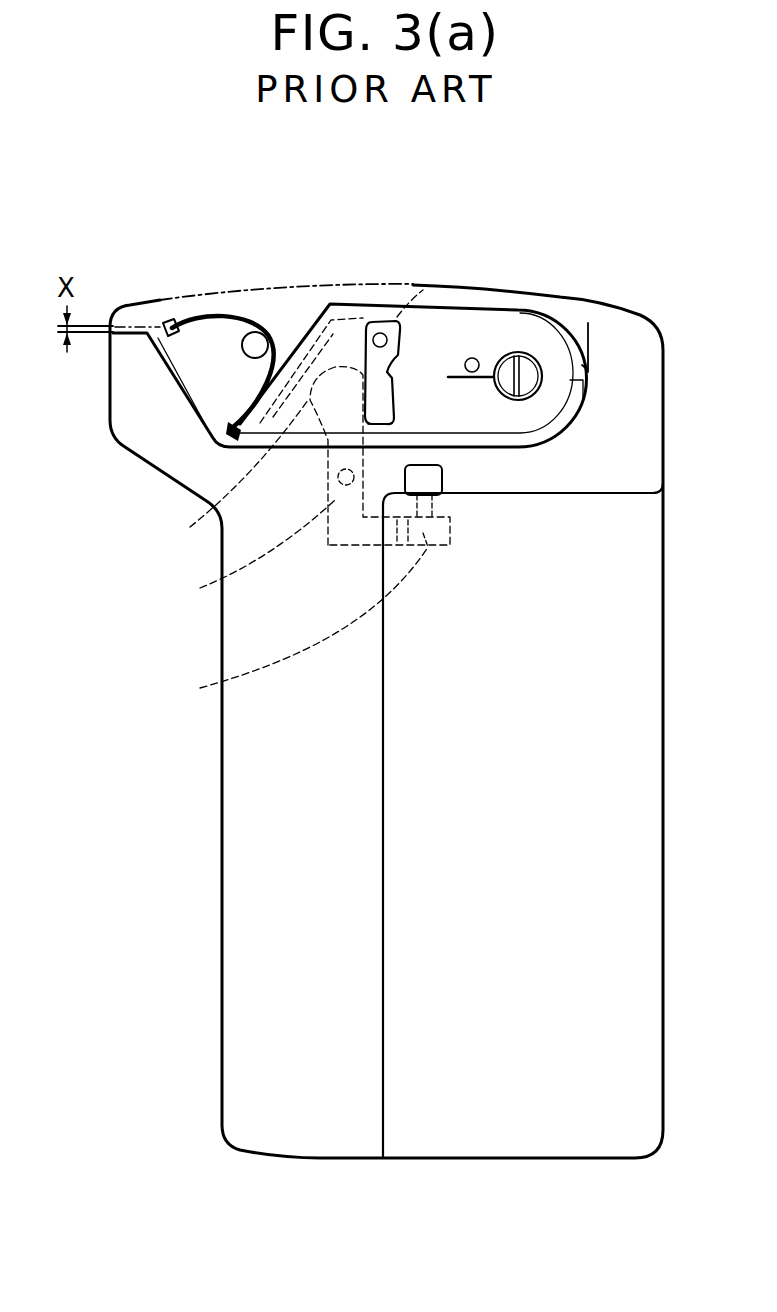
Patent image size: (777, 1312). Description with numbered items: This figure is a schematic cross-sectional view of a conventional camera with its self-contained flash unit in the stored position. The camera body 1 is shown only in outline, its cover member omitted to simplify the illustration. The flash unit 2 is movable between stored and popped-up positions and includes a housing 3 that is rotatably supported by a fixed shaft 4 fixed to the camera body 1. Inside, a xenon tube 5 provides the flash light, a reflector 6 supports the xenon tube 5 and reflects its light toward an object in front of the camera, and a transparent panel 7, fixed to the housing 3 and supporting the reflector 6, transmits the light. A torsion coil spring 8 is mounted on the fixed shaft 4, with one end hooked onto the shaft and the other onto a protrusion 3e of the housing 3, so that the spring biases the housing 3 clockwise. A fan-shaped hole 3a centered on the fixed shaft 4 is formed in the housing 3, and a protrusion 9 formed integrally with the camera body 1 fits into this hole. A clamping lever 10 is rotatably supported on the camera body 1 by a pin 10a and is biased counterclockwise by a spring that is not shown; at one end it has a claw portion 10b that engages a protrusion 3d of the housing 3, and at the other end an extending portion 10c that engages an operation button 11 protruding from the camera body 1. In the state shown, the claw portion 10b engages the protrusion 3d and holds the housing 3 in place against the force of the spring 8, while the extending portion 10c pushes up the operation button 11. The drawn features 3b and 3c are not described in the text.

The camera body 1 is at (218, 803).
The flash unit 2 is at (298, 272).
The housing 3 is at (337, 308).
The fan-shaped hole 3a is at (476, 357).
The stopper portion 3b is at (392, 423).
The pivot shaft 3c is at (376, 322).
The protrusion 3d is at (335, 485).
The protrusion 3e is at (510, 347).
The fixed shaft 4 is at (530, 367).
The xenon tube 5 is at (252, 343).
The reflector 6 is at (207, 317).
The transparent panel 7 is at (167, 322).
The torsion coil spring 8 is at (537, 299).
The protrusion 9 is at (388, 378).
The clamping lever 10 is at (330, 547).
The pin 10a is at (237, 551).
The claw portion 10b is at (222, 470).
The extending portion 10c is at (285, 627).
The operation button 11 is at (434, 478).